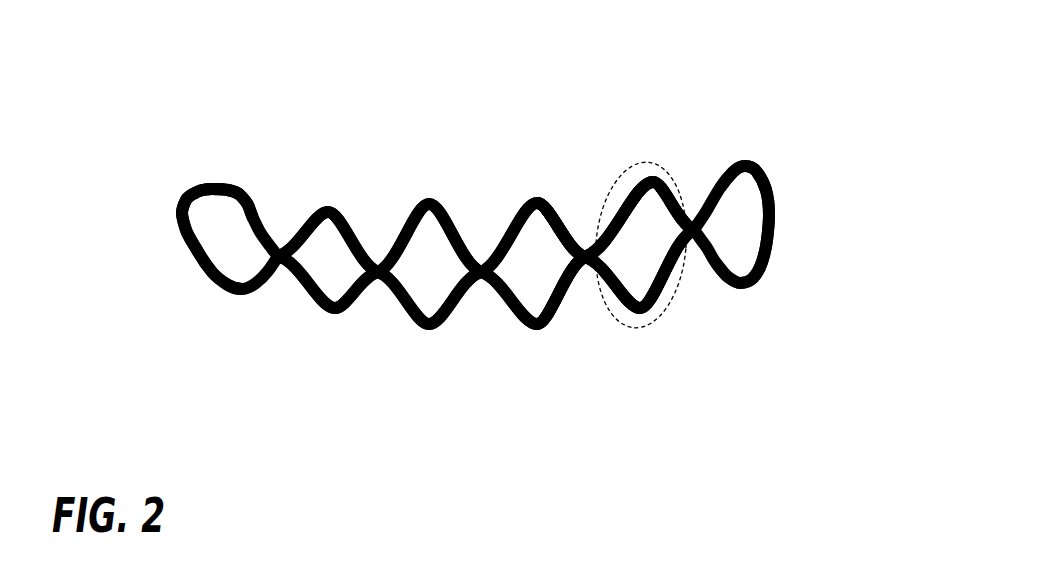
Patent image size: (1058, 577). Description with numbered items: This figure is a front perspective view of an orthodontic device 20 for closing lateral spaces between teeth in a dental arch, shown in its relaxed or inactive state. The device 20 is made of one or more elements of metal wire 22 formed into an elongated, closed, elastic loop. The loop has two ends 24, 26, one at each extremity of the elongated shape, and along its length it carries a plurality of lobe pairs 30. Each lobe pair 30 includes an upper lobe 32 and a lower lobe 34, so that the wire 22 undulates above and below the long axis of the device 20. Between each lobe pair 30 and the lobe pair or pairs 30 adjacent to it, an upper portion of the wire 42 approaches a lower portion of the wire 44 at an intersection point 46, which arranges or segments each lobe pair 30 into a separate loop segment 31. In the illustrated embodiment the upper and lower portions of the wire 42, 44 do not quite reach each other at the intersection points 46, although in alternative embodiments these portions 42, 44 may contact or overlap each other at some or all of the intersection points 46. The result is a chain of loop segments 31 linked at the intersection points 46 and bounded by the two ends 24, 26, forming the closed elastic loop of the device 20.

The orthodontic device 20 is at (205, 59).
The metal wire 22 is at (210, 273).
The end 24 is at (183, 197).
The end 26 is at (775, 208).
The lobe pair 30 is at (550, 300).
The loop segment 31 is at (672, 170).
The upper lobe 32 is at (218, 184).
The lower lobe 34 is at (333, 315).
The upper portion of the wire 42 is at (577, 250).
The lower portion of the wire 44 is at (530, 190).
The intersection point 46 is at (594, 250).